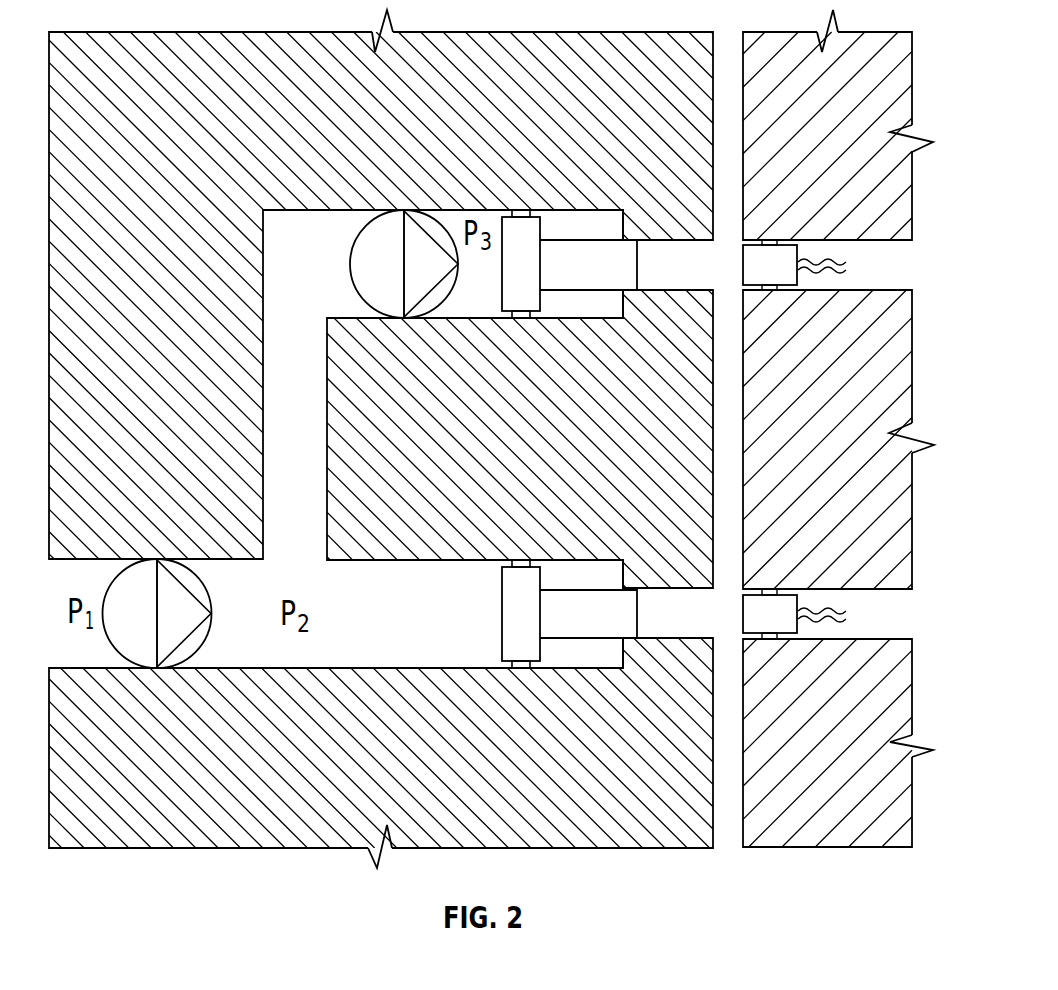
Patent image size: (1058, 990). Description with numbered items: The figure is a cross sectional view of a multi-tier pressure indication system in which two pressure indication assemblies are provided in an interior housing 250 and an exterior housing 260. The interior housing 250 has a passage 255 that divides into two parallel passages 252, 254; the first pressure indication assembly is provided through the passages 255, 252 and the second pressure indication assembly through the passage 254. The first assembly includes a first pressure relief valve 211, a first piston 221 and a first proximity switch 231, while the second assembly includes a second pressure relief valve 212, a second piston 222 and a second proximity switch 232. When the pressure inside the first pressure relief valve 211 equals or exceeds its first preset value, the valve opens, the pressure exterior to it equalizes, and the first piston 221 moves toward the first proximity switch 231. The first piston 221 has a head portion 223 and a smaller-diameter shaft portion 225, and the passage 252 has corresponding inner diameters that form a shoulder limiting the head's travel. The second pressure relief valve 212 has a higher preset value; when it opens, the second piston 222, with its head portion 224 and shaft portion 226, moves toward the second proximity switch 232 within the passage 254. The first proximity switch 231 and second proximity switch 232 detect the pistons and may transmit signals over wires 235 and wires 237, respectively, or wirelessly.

The interior housing 250 is at (199, 158).
The second body block 260 is at (849, 149).
The second pressure relief valve 212 is at (400, 278).
The first pressure relief valve 211 is at (147, 630).
The second piston 222 is at (591, 278).
The first piston 221 is at (590, 628).
The head portion 224 is at (540, 205).
The shaft portion 226 is at (637, 212).
The head portion 223 is at (540, 555).
The shaft portion 225 is at (637, 562).
The second proximity switch 232 is at (791, 278).
The first proximity switch 231 is at (791, 627).
The wires 237 is at (822, 258).
The wires 235 is at (822, 607).
The passage 254 is at (315, 228).
The passage 252 is at (448, 573).
The passage 255 is at (59, 573).